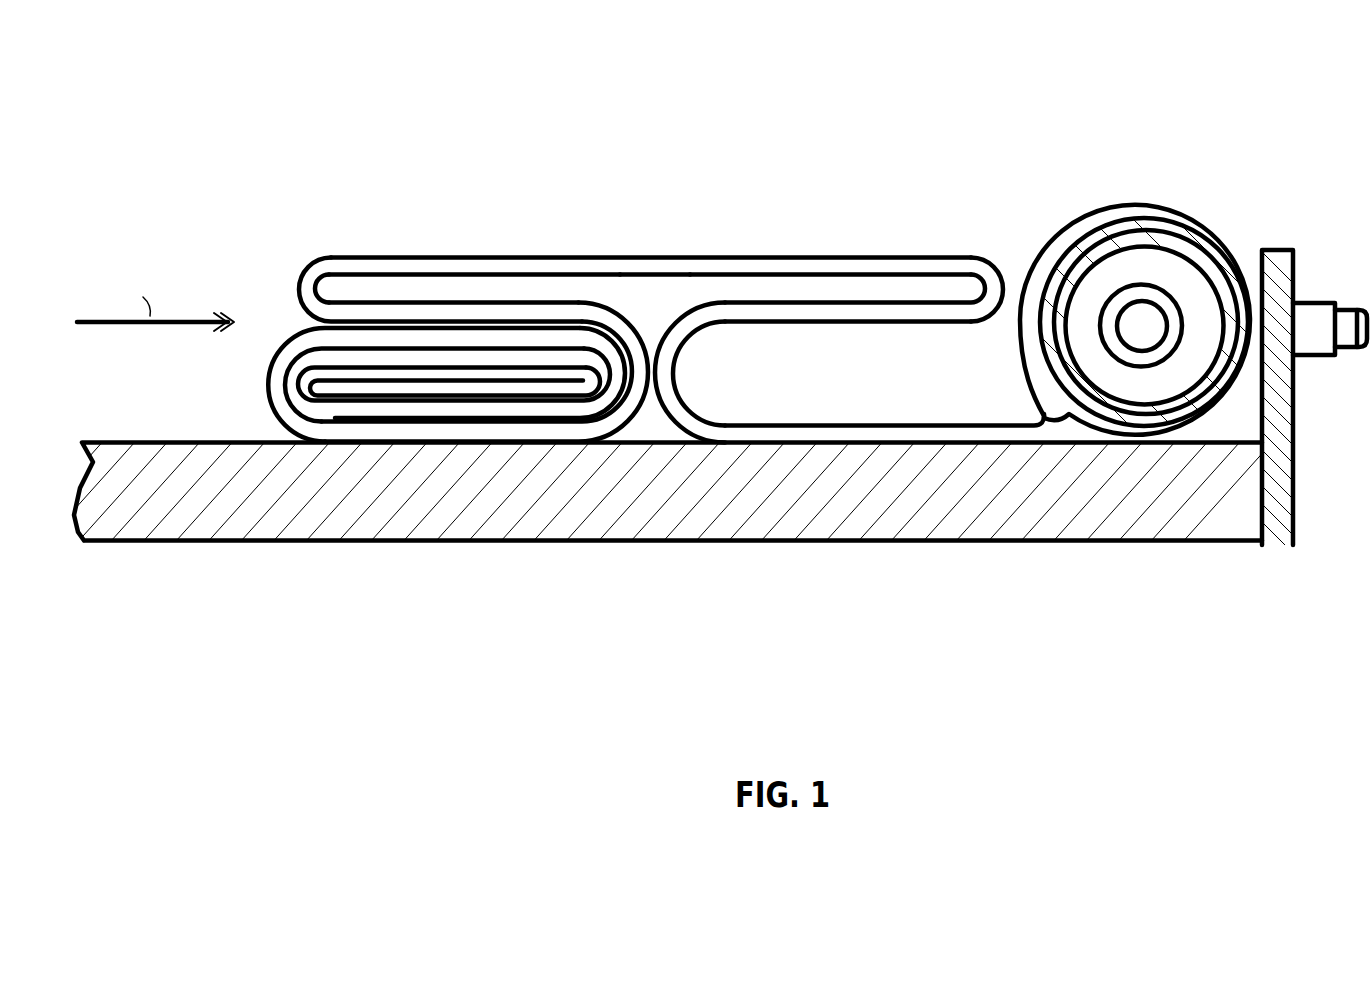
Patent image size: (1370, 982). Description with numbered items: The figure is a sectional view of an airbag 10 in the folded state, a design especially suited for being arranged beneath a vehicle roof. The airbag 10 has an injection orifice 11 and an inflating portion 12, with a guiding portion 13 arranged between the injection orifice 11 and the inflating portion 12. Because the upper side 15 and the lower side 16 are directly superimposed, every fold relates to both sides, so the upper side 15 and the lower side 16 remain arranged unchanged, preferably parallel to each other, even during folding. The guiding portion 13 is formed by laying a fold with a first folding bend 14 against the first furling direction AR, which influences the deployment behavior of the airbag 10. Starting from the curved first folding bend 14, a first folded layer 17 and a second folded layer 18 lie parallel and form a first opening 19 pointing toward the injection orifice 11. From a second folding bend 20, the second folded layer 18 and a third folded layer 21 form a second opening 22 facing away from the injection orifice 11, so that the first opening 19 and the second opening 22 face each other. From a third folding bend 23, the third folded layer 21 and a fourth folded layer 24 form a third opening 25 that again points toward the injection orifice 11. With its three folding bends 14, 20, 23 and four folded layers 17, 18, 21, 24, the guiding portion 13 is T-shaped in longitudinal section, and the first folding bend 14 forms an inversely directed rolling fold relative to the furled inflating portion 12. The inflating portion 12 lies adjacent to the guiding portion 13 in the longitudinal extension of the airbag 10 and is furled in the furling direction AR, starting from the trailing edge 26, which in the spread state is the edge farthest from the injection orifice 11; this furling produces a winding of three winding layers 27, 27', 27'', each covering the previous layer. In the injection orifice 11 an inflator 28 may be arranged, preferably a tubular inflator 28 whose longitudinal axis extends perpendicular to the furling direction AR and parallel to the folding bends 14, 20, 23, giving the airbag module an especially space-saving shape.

The airbag 10 is at (170, 169).
The injection orifice 11 is at (1013, 437).
The inflating portion 12 is at (258, 373).
The guiding portion 13 is at (563, 226).
The first folding bend 14 is at (308, 280).
The upper side 15 is at (718, 256).
The lower side 16 is at (670, 283).
The first folded layer 17 is at (463, 305).
The second folded layer 18 is at (507, 258).
The first opening 19 is at (370, 287).
The second folding bend 20 is at (997, 268).
The third folded layer 21 is at (962, 323).
The second opening 22 is at (947, 288).
The third folding bend 23 is at (675, 402).
The fourth folded layer 24 is at (732, 435).
The third opening 25 is at (738, 368).
The trailing edge 26 is at (292, 412).
The winding layer 27 is at (455, 507).
The winding layer 27' is at (454, 497).
The winding layer 27'' is at (485, 474).
The inflator 28 is at (1140, 326).